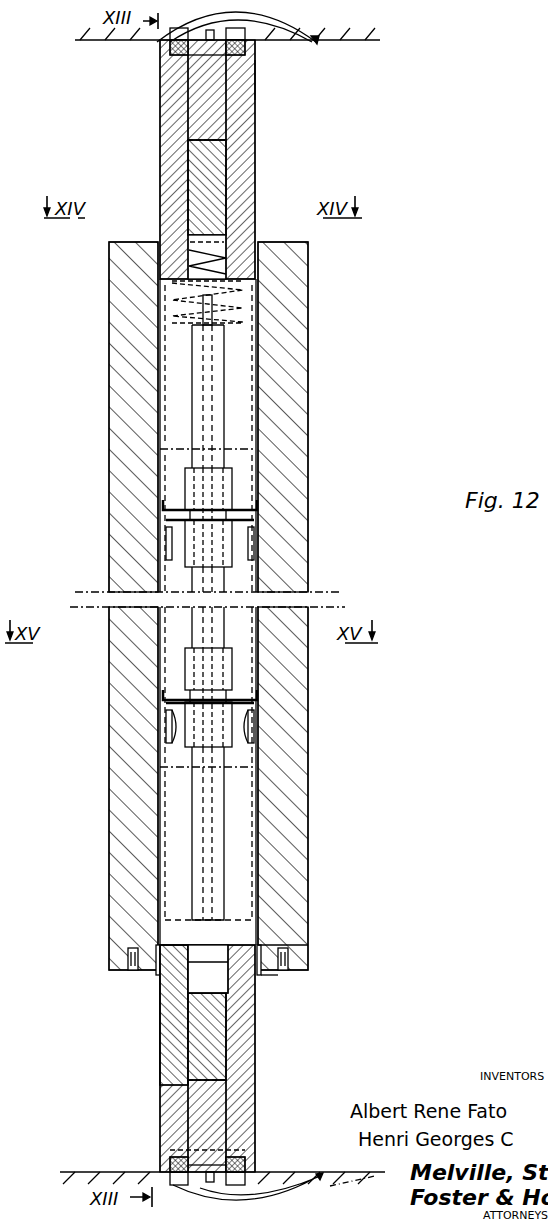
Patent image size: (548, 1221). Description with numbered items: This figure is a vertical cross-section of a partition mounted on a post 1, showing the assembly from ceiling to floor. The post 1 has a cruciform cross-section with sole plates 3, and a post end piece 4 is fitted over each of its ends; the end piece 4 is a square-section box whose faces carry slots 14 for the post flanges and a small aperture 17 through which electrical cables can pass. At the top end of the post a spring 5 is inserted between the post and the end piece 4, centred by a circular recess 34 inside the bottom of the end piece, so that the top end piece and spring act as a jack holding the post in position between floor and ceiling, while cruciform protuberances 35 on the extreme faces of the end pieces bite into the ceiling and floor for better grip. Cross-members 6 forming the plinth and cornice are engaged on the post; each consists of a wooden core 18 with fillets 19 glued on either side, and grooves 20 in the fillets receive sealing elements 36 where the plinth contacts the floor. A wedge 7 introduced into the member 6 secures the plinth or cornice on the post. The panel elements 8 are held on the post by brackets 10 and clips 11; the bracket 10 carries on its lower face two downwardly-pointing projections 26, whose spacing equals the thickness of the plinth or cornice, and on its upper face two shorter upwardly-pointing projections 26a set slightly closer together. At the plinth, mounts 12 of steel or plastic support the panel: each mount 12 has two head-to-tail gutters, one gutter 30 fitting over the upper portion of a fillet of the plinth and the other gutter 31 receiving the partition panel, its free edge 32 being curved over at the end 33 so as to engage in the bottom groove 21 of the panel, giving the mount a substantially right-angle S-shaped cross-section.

The post 1 is at (245, 585).
The sole plate 3 is at (217, 415).
The post end piece 4 is at (242, 362).
The spring 5 is at (258, 247).
The cross-member 6 is at (262, 162).
The wedge 7 is at (162, 218).
The panel element 8 is at (295, 485).
The bracket 10 is at (183, 508).
The clip 11 is at (165, 582).
The mount 12 is at (272, 979).
The slot 14 is at (207, 300).
The small aperture 17 is at (198, 985).
The wooden core 18 is at (182, 125).
The fillet 19 is at (168, 182).
The groove 20 is at (160, 70).
The bottom groove 21 is at (290, 966).
The downwardly-pointing vertical projection 26 is at (166, 550).
The upwardly-pointing projection 26a is at (163, 502).
The gutter 30 is at (160, 972).
The gutter 31 is at (260, 973).
The free edge 32 is at (278, 972).
The curved-over end 33 is at (297, 935).
The circular recess 34 is at (258, 78).
The cruciform protuberance 35 is at (251, 606).
The sealing element 36 is at (170, 50).